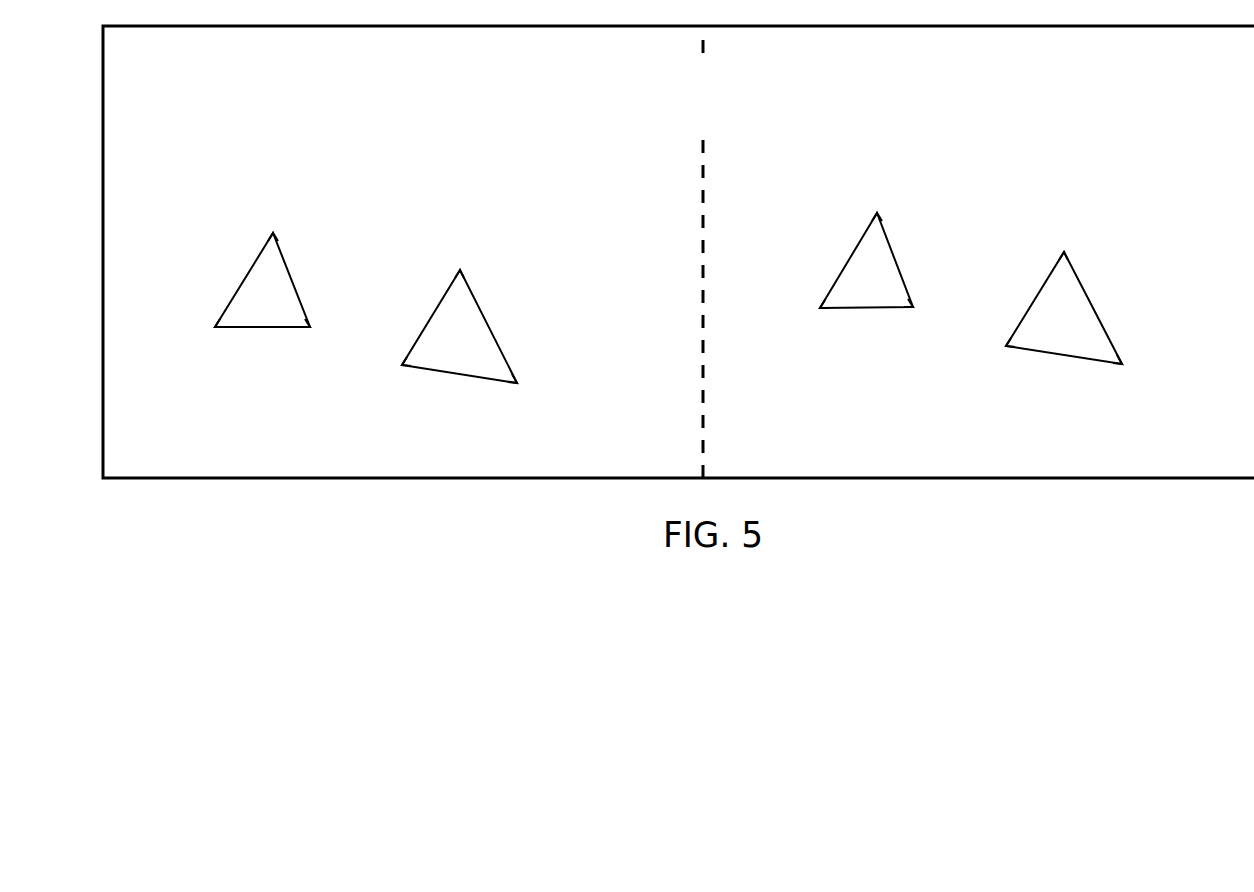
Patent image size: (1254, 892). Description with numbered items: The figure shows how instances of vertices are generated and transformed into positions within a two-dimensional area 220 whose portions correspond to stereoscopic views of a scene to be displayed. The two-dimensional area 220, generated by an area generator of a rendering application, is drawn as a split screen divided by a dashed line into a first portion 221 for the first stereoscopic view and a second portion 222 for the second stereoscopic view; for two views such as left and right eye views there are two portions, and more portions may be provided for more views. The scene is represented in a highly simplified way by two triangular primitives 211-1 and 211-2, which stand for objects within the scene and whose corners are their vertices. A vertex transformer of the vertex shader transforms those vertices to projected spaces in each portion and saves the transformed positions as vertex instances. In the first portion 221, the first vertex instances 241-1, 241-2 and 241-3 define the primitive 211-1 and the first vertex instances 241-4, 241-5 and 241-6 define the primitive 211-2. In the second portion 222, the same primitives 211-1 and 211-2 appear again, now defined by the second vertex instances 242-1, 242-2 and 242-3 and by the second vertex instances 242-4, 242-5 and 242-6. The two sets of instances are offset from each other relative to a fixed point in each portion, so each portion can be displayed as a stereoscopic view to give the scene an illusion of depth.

The 2D area 220 is at (678, 252).
The first portion 221 is at (421, 141).
The second portion 222 is at (1022, 141).
The primitive 211-1 is at (250, 268).
The primitive 211-2 is at (452, 373).
The first vertex instance 241-1 is at (274, 232).
The first vertex instance 241-2 is at (311, 325).
The first vertex instance 241-3 is at (214, 328).
The first vertex instance 241-4 is at (461, 269).
The first vertex instance 241-5 is at (518, 383).
The first vertex instance 241-6 is at (401, 366).
The second vertex instance 242-1 is at (878, 212).
The second vertex instance 242-2 is at (914, 306).
The second vertex instance 242-3 is at (819, 309).
The second vertex instance 242-4 is at (1065, 251).
The second vertex instance 242-5 is at (1123, 364).
The second vertex instance 242-6 is at (1005, 347).